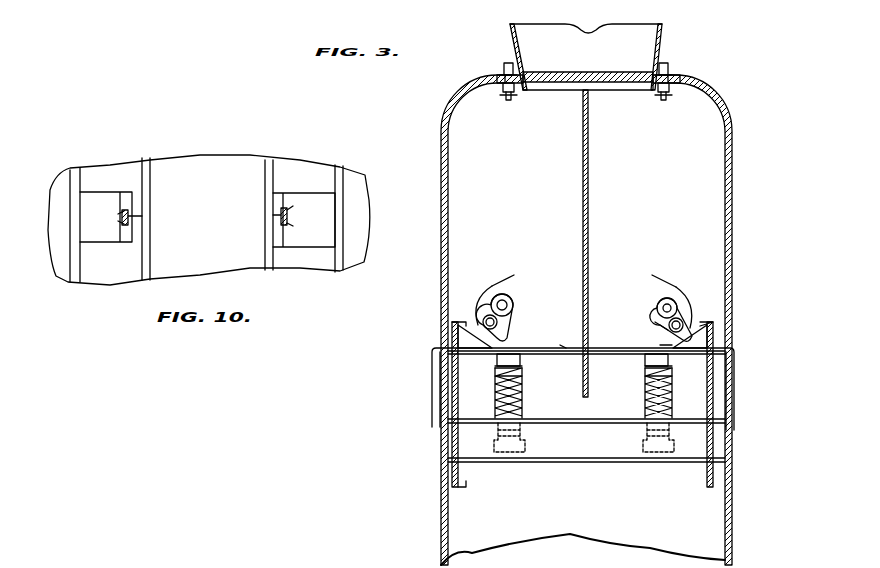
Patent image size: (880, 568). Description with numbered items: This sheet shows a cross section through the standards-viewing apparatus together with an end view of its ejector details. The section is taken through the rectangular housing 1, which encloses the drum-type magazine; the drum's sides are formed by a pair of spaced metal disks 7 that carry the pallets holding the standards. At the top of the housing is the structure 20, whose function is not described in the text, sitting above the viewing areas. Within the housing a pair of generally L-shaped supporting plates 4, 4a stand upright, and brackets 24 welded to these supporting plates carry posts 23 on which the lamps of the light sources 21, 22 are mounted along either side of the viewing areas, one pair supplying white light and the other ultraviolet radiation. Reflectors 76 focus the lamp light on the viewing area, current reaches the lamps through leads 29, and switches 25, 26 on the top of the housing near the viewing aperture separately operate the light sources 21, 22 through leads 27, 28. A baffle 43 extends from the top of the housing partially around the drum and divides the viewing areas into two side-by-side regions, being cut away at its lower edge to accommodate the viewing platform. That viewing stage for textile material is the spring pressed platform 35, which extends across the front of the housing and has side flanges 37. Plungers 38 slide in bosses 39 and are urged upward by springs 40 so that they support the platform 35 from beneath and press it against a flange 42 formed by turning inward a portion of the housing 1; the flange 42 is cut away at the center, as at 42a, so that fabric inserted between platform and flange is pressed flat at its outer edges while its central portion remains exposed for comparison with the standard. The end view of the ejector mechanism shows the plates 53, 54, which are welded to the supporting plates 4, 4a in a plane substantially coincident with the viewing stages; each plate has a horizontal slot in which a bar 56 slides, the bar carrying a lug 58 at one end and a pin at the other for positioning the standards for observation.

In FIG. 3, the housing 1 is at (440, 284).
In FIG. 3, the nozzle 20 is at (558, 22).
In FIG. 3, the switch 25 is at (670, 68).
In FIG. 3, the switch 26 is at (504, 69).
In FIG. 3, the lead 27 is at (511, 100).
In FIG. 3, the lead 28 is at (666, 100).
In FIG. 3, the baffle 43 is at (588, 238).
In FIG. 3, the side flange 37 is at (432, 395).
In FIG. 3, the spring pressed platform 35 is at (590, 352).
In FIG. 3, the supporting plate 4 is at (458, 480).
In FIG. 10, the supporting plate 4 is at (356, 218).
In FIG. 3, the supporting plate 4a is at (710, 480).
In FIG. 10, the supporting plate 4a is at (78, 186).
In FIG. 3, the bracket 24 is at (455, 338).
In FIG. 3, the light source 21 is at (527, 302).
In FIG. 3, the lead 29 is at (488, 300).
In FIG. 3, the reflector 76 is at (514, 275).
In FIG. 3, the post 23 is at (500, 325).
In FIG. 3, the light source 22 is at (648, 295).
In FIG. 3, the flange 42 is at (660, 345).
In FIG. 3, the cut-away portion 42a is at (566, 344).
In FIG. 3, the spring 40 is at (520, 385).
In FIG. 3, the plunger 38 is at (522, 408).
In FIG. 3, the boss 39 is at (519, 454).
In FIG. 10, the metal disk 7 is at (150, 190).
In FIG. 10, the plate 54 is at (97, 233).
In FIG. 10, the plate 53 is at (303, 233).
In FIG. 10, the lug 58 is at (136, 218).
In FIG. 10, the bar 56 is at (120, 216).